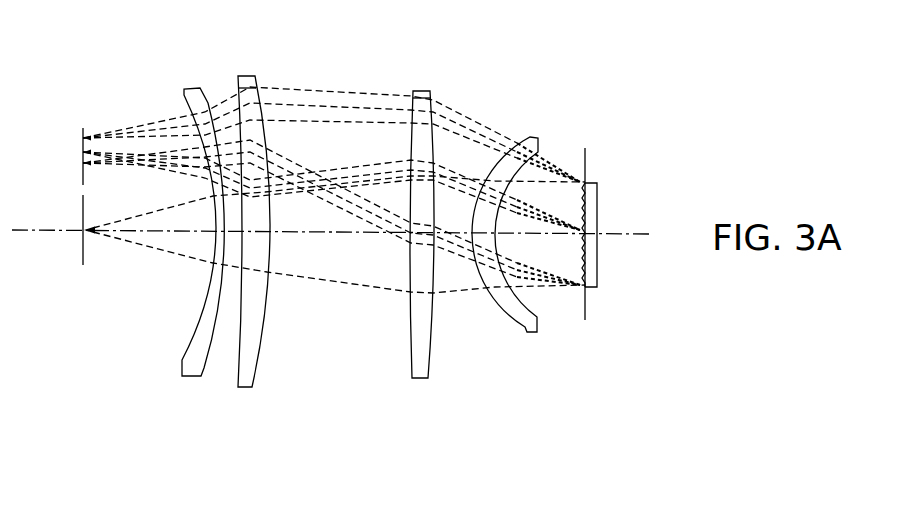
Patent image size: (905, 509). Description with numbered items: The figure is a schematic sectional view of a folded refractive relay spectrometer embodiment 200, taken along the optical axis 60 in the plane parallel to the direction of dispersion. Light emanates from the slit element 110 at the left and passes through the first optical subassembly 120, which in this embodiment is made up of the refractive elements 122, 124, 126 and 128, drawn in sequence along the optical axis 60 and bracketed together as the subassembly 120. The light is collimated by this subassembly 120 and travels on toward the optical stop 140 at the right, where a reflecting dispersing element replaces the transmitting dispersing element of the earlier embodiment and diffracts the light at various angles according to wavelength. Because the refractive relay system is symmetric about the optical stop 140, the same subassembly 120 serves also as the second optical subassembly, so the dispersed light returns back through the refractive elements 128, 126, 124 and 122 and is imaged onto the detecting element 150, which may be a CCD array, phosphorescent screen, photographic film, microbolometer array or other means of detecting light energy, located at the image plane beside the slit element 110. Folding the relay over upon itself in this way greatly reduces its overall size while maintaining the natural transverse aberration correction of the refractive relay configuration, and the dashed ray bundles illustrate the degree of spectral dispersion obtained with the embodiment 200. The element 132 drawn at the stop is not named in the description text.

The folded refractive relay spectrometer embodiment 200 is at (117, 44).
The optical axis 60 is at (43, 230).
The detecting element 150 is at (83, 129).
The slit element 110 is at (82, 257).
The first optical subassembly 120 is at (537, 348).
The refractive element 122 is at (204, 102).
The refractive element 124 is at (243, 76).
The refractive element 126 is at (424, 93).
The refractive element 128 is at (534, 150).
The optical stop 140 is at (585, 150).
The image sensor 132 is at (598, 287).